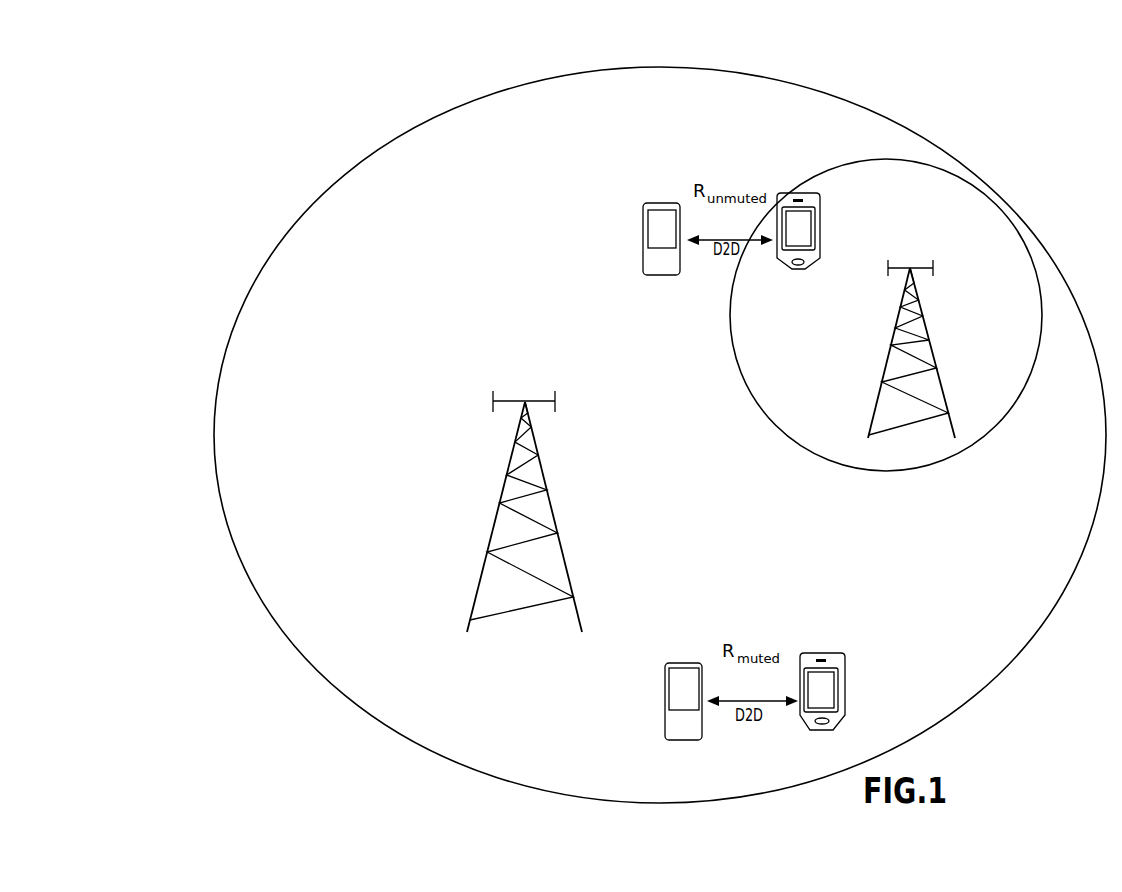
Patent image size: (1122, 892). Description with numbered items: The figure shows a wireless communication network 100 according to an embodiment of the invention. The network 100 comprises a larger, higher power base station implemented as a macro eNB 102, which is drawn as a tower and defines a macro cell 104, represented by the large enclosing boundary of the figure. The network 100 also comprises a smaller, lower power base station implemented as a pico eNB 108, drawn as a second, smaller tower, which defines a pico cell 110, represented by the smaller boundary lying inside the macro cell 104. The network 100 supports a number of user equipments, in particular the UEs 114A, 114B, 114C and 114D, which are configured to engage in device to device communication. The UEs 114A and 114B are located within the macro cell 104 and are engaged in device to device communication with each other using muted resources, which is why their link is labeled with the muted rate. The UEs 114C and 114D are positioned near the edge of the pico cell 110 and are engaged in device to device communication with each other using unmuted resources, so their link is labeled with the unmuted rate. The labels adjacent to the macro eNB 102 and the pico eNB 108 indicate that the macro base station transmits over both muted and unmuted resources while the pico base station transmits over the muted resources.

The network 100 is at (1005, 72).
The macro eNB 102 is at (552, 516).
The macro cell 104 is at (213, 433).
The pico eNB 108 is at (933, 351).
The pico cell 110 is at (731, 334).
The UE 114A is at (665, 702).
The UE 114B is at (845, 687).
The UE 114C is at (662, 277).
The UE 114D is at (795, 269).